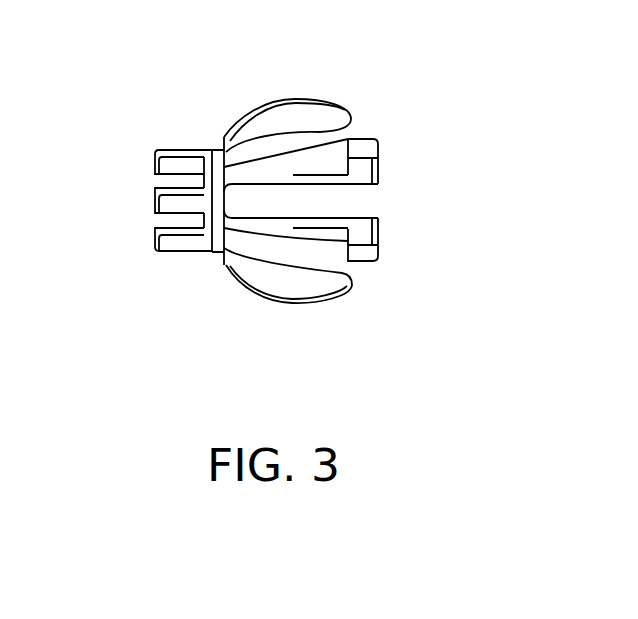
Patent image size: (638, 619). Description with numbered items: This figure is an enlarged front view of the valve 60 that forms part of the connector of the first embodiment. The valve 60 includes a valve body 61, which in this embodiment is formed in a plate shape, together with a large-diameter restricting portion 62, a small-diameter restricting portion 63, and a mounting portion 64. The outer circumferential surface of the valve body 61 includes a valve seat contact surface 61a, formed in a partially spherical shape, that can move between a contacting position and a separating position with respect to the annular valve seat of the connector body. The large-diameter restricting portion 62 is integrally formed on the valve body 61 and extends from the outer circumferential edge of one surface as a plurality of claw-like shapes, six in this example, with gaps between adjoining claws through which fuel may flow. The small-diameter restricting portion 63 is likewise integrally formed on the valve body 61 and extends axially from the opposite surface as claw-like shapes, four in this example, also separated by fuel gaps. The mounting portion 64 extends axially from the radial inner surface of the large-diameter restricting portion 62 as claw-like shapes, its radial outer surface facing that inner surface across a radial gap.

The valve 60 is at (364, 92).
The valve body 61 is at (220, 156).
The valve seat contact surface 61a is at (213, 186).
The large-diameter restricting portion 62 is at (306, 113).
The small-diameter restricting portion 63 is at (165, 253).
The mounting portion 64 is at (362, 262).